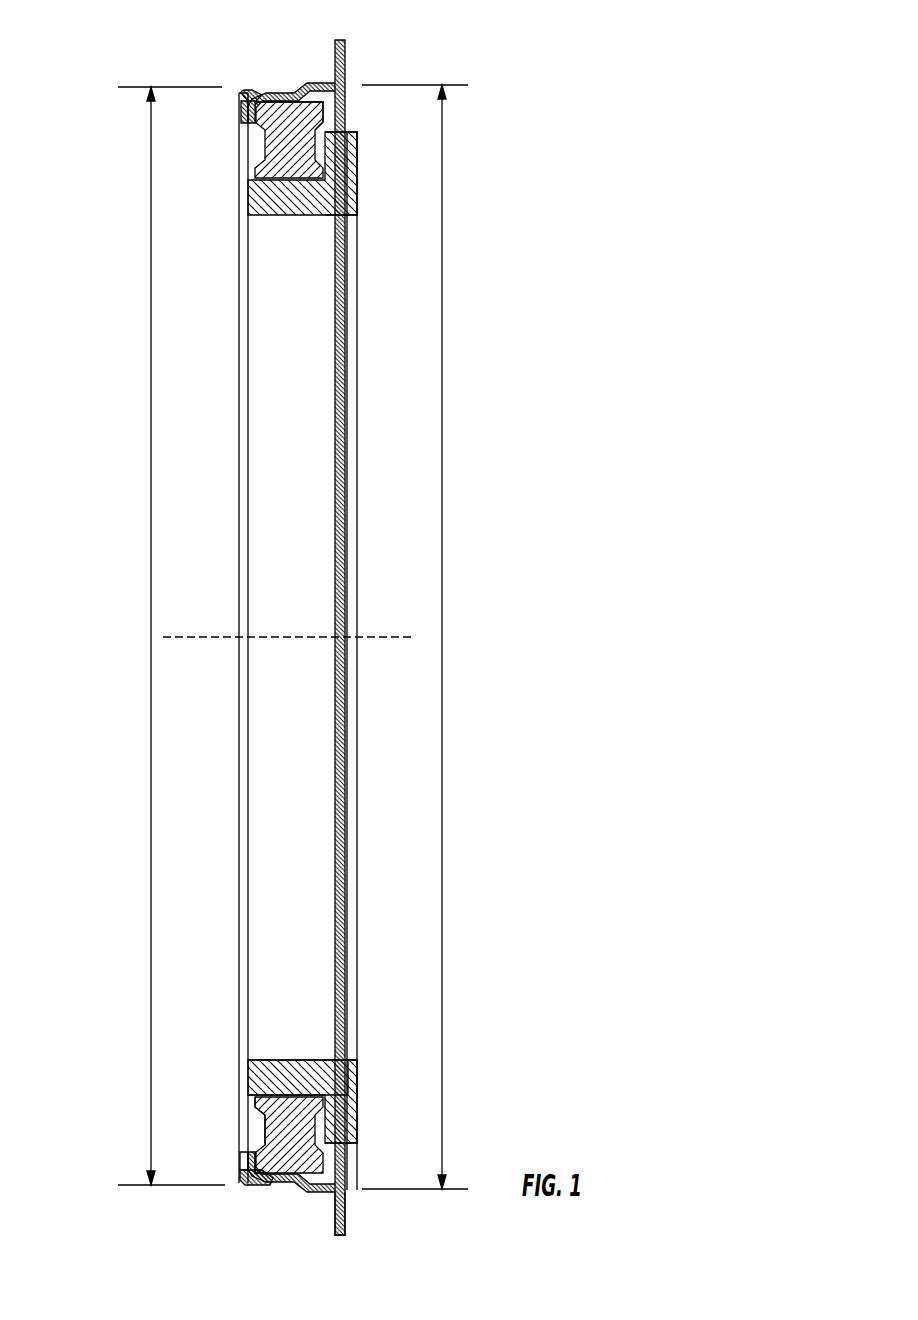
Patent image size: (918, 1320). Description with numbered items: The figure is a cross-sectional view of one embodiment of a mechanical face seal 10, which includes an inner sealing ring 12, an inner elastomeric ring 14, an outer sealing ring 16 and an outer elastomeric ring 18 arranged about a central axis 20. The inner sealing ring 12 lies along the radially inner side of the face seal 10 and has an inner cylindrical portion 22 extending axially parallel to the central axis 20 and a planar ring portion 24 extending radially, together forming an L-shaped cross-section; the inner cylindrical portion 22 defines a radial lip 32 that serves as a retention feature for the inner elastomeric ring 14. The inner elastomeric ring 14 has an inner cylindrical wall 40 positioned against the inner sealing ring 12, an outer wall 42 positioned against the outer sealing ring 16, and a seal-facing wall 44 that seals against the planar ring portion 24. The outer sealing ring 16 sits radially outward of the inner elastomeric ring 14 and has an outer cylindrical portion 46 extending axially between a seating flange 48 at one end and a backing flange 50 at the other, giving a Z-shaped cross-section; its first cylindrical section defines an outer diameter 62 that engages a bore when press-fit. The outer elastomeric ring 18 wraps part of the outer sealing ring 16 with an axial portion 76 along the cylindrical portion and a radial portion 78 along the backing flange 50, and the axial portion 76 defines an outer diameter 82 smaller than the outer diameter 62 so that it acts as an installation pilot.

The face seal 10 is at (724, 101).
The inner sealing ring 12 is at (338, 223).
The inner elastomeric ring 14 is at (303, 1111).
The outer sealing ring 16 is at (318, 76).
The outer elastomeric ring 18 is at (234, 1175).
The central axis 20 is at (375, 637).
The inner cylindrical portion 22 is at (295, 1068).
The planar ring portion 24 is at (345, 1127).
The radial lip 32 is at (267, 1110).
The inner cylindrical wall 40 is at (290, 180).
The outer wall 42 is at (283, 102).
The seal-facing wall 44 is at (326, 163).
The outer cylindrical portion 46 is at (300, 1185).
The seating flange 48 is at (345, 1210).
The backing flange 50 is at (248, 1153).
The outer diameter 62 is at (442, 555).
The axial portion 76 is at (270, 90).
The radial portion 78 is at (242, 112).
The outer diameter 82 is at (151, 568).